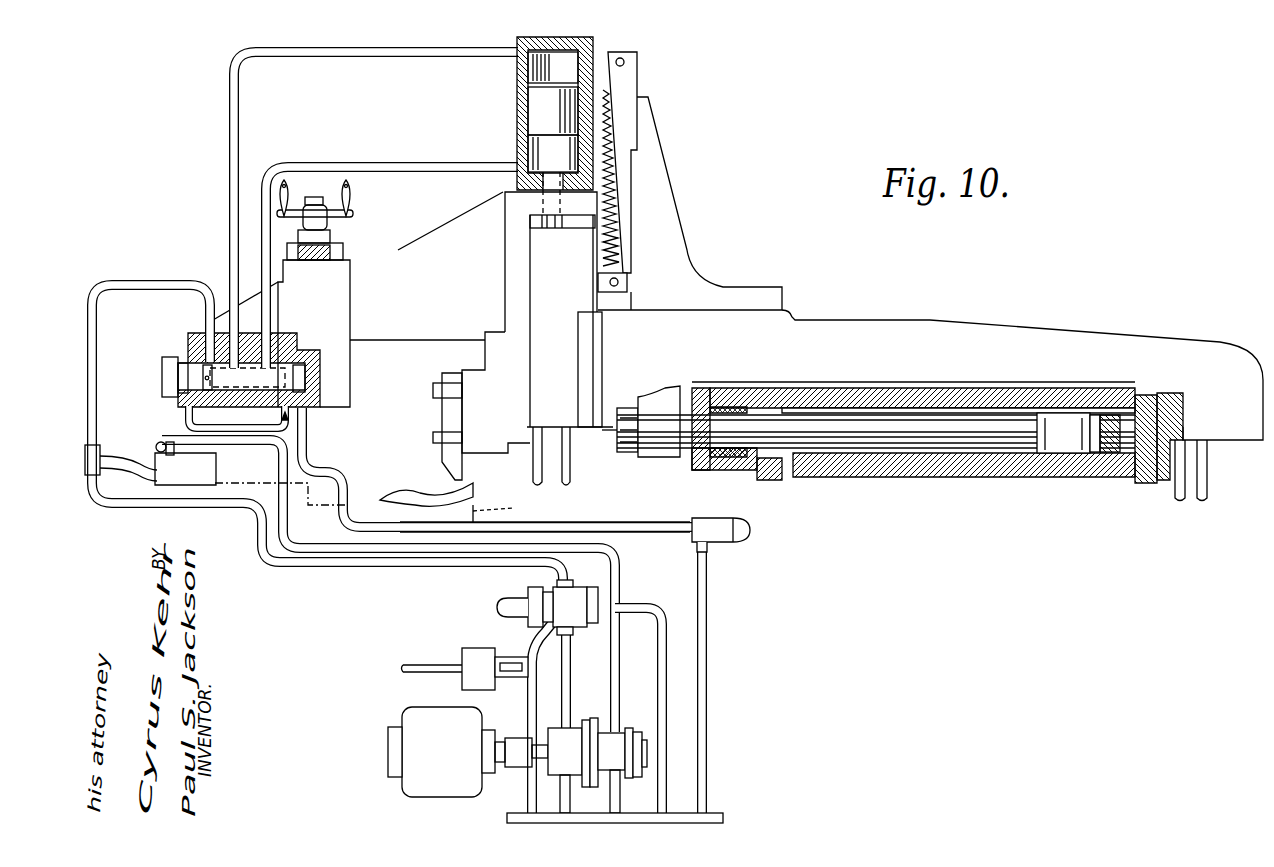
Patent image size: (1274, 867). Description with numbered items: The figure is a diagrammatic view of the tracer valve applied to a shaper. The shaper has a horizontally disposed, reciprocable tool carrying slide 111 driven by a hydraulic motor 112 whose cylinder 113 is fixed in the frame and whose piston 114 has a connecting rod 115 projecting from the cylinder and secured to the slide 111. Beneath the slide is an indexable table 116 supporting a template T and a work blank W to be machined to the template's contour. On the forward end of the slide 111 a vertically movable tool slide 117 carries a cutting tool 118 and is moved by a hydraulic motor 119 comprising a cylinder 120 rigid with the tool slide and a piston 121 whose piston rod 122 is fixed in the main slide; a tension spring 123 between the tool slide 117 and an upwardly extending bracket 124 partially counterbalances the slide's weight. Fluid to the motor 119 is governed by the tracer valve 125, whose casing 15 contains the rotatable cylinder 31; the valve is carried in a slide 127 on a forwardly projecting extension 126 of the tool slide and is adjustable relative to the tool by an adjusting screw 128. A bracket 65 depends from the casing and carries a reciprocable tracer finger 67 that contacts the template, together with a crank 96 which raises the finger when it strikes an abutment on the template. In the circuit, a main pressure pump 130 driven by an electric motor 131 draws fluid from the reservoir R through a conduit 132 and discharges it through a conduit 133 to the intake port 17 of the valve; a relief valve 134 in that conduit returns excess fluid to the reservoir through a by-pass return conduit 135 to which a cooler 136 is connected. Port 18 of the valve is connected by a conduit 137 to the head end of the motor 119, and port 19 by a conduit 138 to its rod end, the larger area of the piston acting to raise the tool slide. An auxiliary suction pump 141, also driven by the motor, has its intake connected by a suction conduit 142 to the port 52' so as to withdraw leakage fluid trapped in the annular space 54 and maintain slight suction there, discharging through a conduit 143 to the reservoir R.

The valve casing 15 is at (302, 357).
The intake port 17 is at (209, 333).
The port 18 is at (233, 350).
The port 19 is at (268, 345).
The cylinder 31 is at (305, 380).
The annular space 54 is at (188, 357).
The bracket 65 is at (266, 430).
The tracer finger 67 is at (175, 448).
The crank 96 is at (192, 480).
The slide 111 is at (858, 322).
The hydraulic motor 112 is at (752, 478).
The cylinder 113 is at (998, 400).
The piston 114 is at (1075, 420).
The connecting rod 115 is at (922, 440).
The table 116 is at (531, 518).
The tool slide 117 is at (510, 297).
The cutting tool 118 is at (447, 413).
The hydraulic motor 119 is at (512, 125).
The cylinder 120 is at (520, 78).
The piston 121 is at (540, 105).
The piston rod 122 is at (548, 155).
The tension spring 123 is at (612, 182).
The bracket 124 is at (655, 215).
The tracer valve 125 is at (271, 440).
The extension 126 is at (398, 250).
The slide 127 is at (347, 327).
The adjusting screw 128 is at (322, 238).
The main pressure pump 130 is at (572, 730).
The electric motor 131 is at (438, 758).
The conduit 132 is at (594, 808).
The conduit 133 is at (372, 560).
The relief valve 134 is at (528, 592).
The by-pass return conduit 135 is at (527, 703).
The cooler 136 is at (480, 658).
The conduit 137 is at (332, 50).
The conduit 138 is at (366, 168).
The auxiliary pump 141 is at (618, 737).
The suction conduit 142 is at (280, 517).
The conduit 143 is at (644, 808).
The port 52' is at (150, 419).
The template T is at (128, 454).
The tank T' is at (105, 436).
The work blank W is at (394, 493).
The reservoir R is at (710, 815).